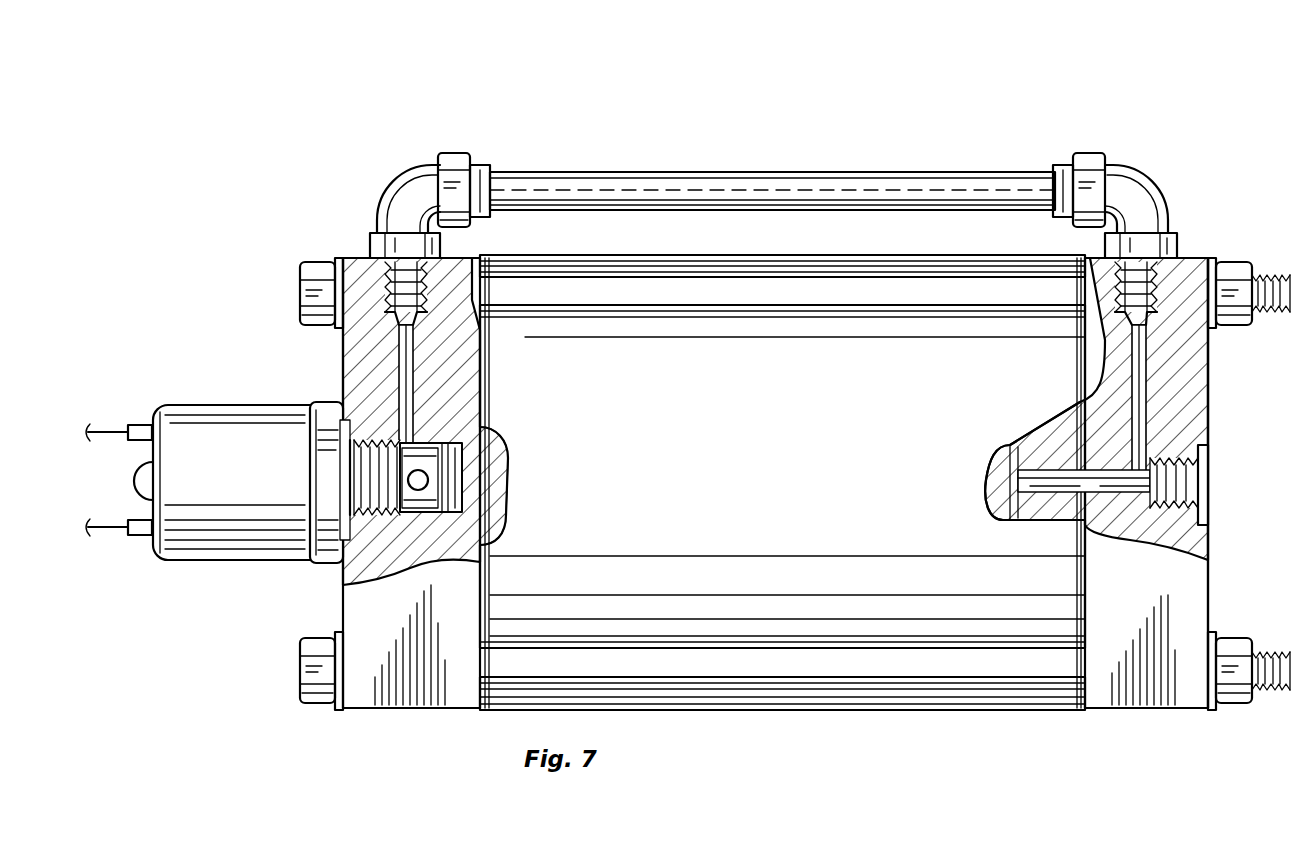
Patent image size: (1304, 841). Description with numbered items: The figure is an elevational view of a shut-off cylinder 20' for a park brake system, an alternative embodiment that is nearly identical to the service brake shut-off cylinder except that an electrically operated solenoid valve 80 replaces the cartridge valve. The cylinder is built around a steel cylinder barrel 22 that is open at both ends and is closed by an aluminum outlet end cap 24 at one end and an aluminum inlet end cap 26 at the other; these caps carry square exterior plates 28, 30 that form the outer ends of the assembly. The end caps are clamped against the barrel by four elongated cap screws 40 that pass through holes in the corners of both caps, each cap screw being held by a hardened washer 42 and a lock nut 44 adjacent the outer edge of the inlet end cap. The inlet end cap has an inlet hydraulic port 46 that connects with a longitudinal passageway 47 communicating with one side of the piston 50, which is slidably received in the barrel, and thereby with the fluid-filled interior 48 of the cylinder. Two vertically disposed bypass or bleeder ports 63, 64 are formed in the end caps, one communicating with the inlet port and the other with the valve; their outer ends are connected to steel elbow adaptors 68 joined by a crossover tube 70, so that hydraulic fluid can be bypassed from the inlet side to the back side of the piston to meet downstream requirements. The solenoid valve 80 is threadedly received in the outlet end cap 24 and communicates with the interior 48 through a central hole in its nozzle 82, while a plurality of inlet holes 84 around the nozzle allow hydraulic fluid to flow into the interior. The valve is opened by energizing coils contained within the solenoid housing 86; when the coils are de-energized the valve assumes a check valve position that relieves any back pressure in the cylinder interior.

The shut-off cylinder 20' is at (782, 192).
The cylinder barrel 22 is at (900, 706).
The outlet end cap 24 is at (440, 690).
The inlet end cap 26 is at (1100, 690).
The exterior plate 28 is at (343, 572).
The exterior plate 30 is at (1208, 572).
The cap screws 40 is at (645, 290).
The hardened washer 42 is at (1210, 262).
The lock nut 44 is at (1238, 268).
The inlet hydraulic port 46 is at (1198, 470).
The longitudinal passageway 47 is at (1052, 490).
The interior 48 is at (502, 500).
The piston 50 is at (992, 480).
The bleeder port 63 is at (402, 368).
The bleeder port 64 is at (1140, 407).
The elbow adaptors 68 is at (400, 186).
The crossover tube 70 is at (810, 188).
The solenoid valve 80 is at (372, 482).
The nozzle 82 is at (436, 505).
The inlet holes 84 is at (417, 491).
The solenoid housing 86 is at (245, 425).